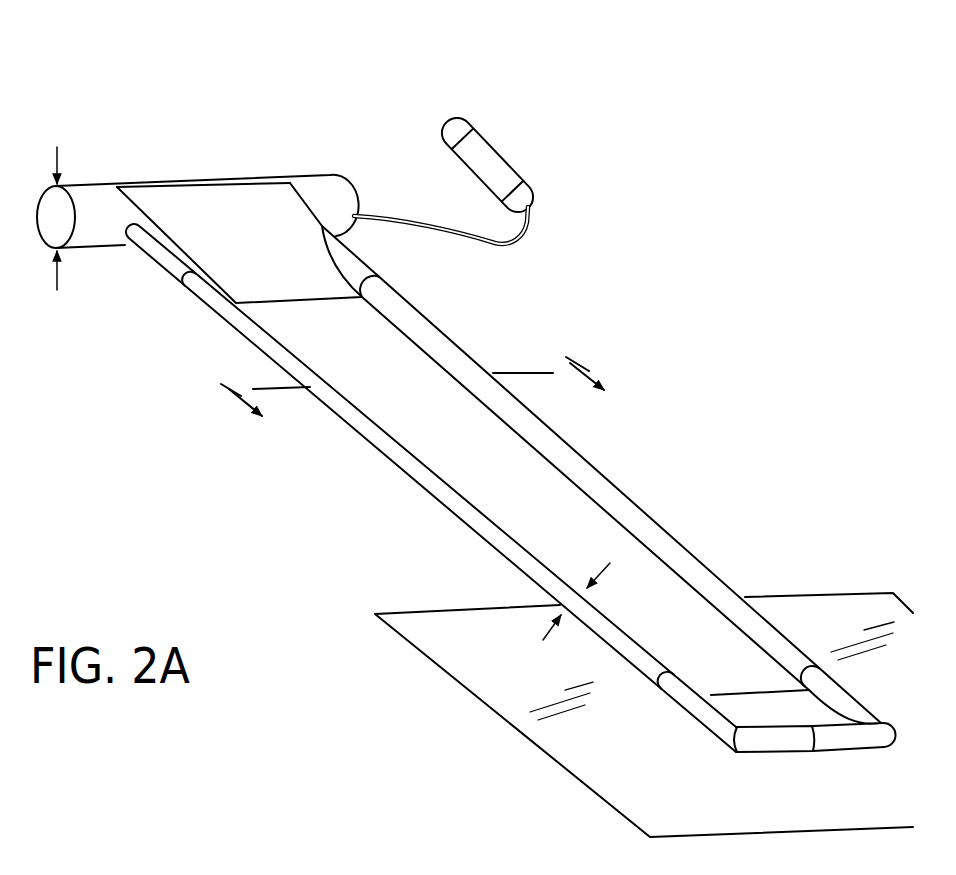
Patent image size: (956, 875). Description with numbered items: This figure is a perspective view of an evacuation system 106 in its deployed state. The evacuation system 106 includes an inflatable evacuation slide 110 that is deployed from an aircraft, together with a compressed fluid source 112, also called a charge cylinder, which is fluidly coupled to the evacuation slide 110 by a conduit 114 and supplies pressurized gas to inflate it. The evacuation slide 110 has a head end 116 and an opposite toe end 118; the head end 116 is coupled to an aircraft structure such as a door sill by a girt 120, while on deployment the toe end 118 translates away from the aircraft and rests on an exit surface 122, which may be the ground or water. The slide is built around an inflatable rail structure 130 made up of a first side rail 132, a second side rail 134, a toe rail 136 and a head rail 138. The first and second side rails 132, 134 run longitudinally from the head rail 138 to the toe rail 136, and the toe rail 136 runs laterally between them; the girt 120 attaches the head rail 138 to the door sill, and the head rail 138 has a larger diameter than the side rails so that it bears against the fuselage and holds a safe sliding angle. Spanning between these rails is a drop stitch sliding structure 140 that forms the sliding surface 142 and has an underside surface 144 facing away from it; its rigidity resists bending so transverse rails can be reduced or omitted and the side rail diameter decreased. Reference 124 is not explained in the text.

The evacuation system 106 is at (650, 123).
The evacuation slide 110 is at (222, 118).
The compressed fluid source 112 is at (492, 167).
The conduit 114 is at (500, 243).
The head end 116 is at (206, 177).
The toe end 118 is at (846, 740).
The girt 120 is at (285, 243).
The exit surface 122 is at (648, 770).
The plate surface 124 is at (808, 581).
The inflatable rail structure 130 is at (201, 311).
The first side rail 132 is at (382, 437).
The second side rail 134 is at (630, 510).
The toe rail 136 is at (821, 741).
The head rail 138 is at (100, 213).
The sliding structure 140 is at (425, 373).
The sliding surface 142 is at (463, 475).
The underside surface 144 is at (485, 546).